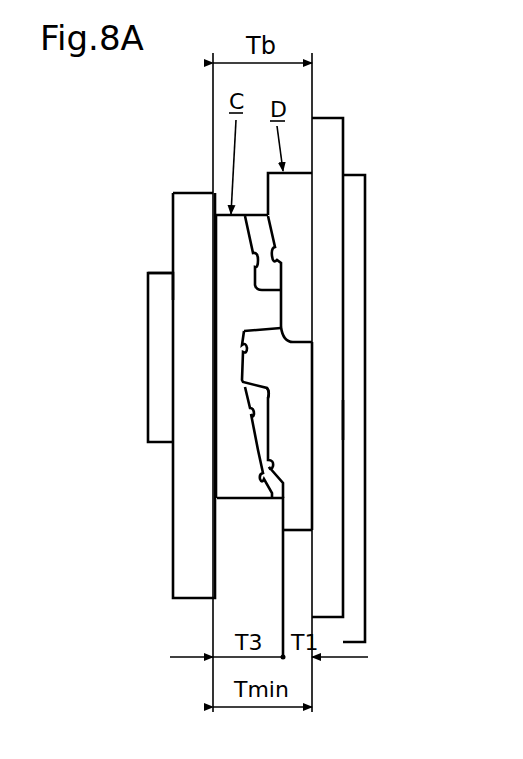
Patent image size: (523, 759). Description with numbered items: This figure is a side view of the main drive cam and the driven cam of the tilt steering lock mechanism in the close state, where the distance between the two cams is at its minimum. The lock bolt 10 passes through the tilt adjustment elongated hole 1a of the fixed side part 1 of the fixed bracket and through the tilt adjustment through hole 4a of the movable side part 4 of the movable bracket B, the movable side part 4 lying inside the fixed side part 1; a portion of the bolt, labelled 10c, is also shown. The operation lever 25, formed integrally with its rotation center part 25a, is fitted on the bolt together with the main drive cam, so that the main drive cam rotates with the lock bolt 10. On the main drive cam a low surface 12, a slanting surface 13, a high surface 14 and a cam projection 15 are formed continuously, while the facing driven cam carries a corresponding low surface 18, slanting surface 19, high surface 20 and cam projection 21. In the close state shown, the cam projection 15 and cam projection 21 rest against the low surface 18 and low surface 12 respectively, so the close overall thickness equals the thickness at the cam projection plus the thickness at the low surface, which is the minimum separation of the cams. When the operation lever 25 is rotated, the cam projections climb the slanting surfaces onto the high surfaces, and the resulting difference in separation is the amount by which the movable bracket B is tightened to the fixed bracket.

The fixed side part 1 is at (344, 158).
The tilt adjustment elongated hole 1a is at (327, 293).
The movable side part 4 is at (367, 580).
The tilt adjustment through hole 4a is at (353, 417).
The movable bracket B is at (367, 610).
The lock bolt 10 is at (146, 357).
The projection of housing 10c is at (148, 273).
The low surface 12 is at (243, 355).
The slanting surface 13 is at (255, 268).
The high surface 14 is at (260, 498).
The cam projection 15 is at (263, 307).
The low surface 18 is at (312, 342).
The slanting surface 19 is at (282, 262).
The high surface 20 is at (270, 408).
The cam projection 21 is at (259, 368).
The operation lever 25 is at (172, 528).
The rotation center part 25a is at (173, 218).